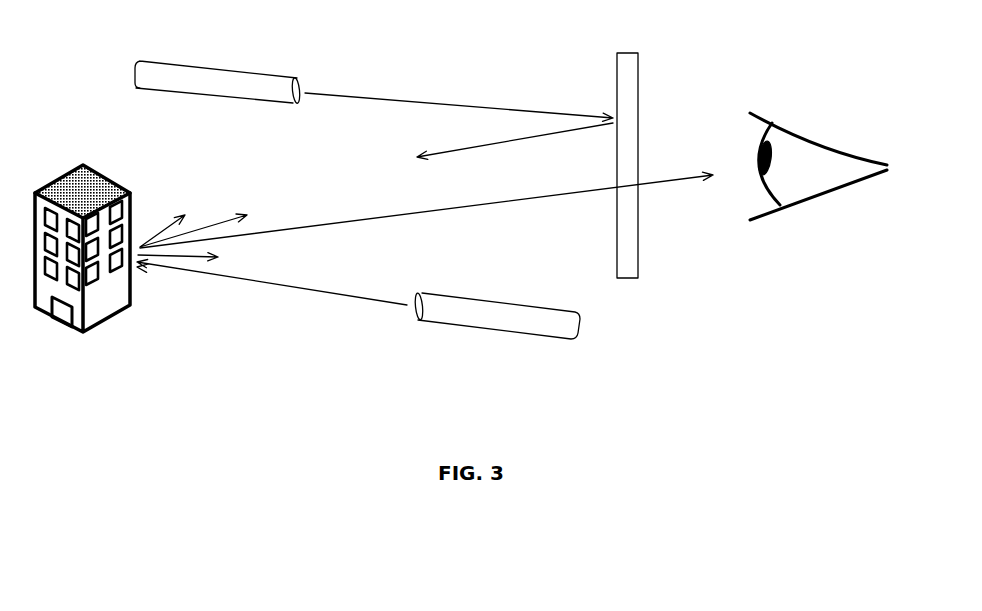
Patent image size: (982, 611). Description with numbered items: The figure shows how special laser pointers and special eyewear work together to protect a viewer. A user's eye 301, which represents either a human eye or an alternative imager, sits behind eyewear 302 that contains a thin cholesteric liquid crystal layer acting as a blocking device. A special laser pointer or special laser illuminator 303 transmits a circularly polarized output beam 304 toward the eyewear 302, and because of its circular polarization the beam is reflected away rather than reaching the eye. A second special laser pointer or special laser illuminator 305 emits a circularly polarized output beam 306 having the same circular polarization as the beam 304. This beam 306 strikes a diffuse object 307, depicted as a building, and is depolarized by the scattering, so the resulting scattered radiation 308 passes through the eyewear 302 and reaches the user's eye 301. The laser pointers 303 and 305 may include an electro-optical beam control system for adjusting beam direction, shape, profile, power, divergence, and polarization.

The user's eye 301 is at (788, 203).
The eyewear 302 is at (613, 90).
The special laser pointer or special laser illuminator 303 is at (265, 73).
The circularly polarized output beam 304 is at (360, 97).
The special laser pointer or special laser illuminator 305 is at (445, 292).
The circularly polarized output beam 306 is at (245, 280).
The diffuse object 307 is at (134, 208).
The scattered radiation 308 is at (278, 238).